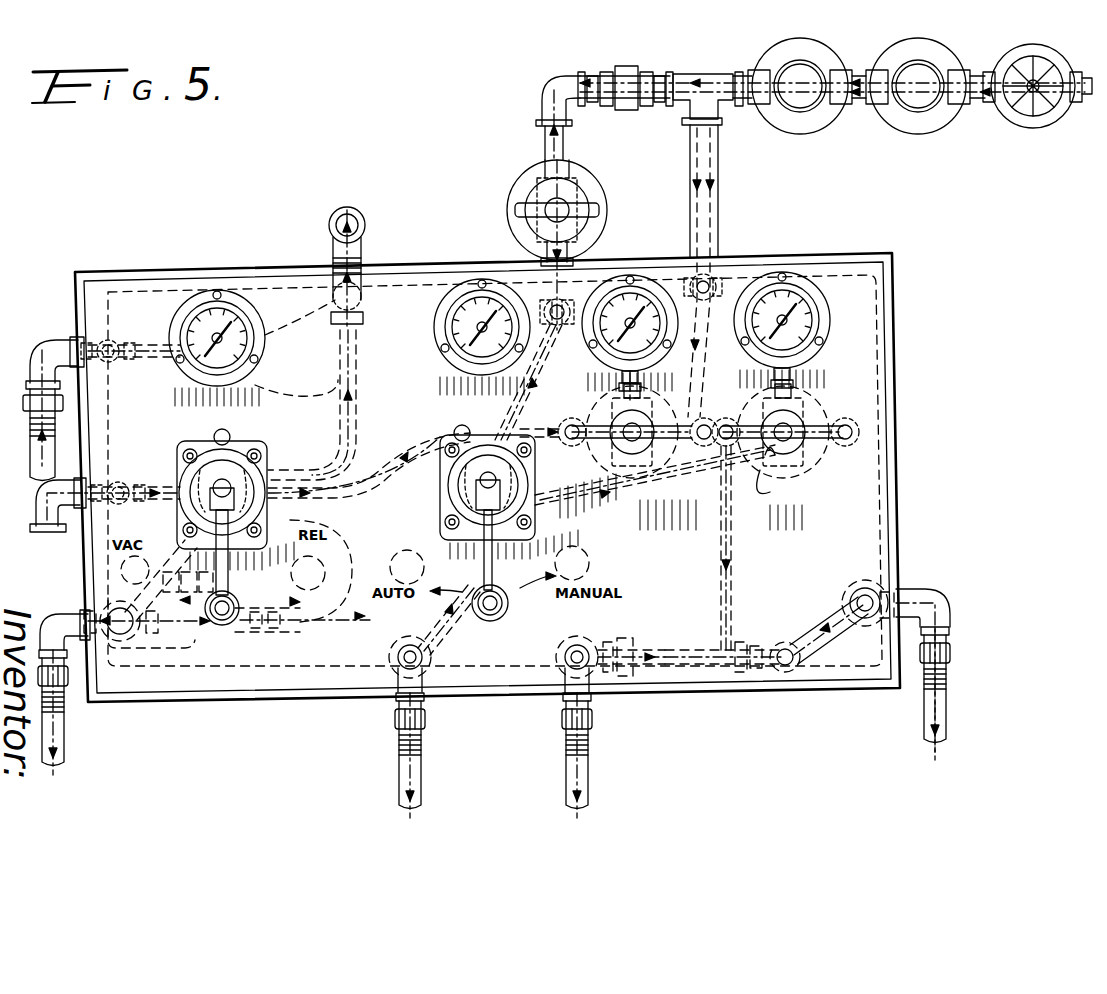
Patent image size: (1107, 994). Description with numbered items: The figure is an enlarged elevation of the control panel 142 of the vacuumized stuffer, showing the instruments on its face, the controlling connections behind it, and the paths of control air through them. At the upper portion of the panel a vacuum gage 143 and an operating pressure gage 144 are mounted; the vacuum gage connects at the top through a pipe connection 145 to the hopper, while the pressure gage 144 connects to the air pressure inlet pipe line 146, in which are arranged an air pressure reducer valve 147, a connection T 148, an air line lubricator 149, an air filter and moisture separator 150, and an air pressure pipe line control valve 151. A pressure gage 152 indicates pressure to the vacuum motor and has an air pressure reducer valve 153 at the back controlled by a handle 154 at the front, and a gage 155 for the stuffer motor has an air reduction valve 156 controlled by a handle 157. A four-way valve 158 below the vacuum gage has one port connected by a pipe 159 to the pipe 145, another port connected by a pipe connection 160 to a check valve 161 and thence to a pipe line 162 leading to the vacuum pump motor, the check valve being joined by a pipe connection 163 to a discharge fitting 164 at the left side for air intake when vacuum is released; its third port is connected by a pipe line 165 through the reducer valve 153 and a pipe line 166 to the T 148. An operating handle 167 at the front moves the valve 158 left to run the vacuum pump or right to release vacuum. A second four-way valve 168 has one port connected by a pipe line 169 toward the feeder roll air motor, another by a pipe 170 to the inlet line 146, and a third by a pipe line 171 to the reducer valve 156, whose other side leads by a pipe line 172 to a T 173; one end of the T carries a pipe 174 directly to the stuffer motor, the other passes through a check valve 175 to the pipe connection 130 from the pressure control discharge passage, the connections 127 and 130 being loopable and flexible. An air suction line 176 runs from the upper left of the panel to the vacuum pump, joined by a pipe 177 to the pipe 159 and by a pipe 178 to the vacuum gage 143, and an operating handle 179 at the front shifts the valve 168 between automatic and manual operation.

The air pressure pipe line connection 127 is at (398, 762).
The pipe connection 130 is at (590, 770).
The control panel 142 is at (424, 396).
The vacuum gage 143 is at (200, 380).
The pressure gage 144 is at (452, 334).
The pipe connection 145 is at (364, 226).
The air pressure inlet pipe line 146 is at (541, 136).
The air pressure reducer valve 147 is at (590, 230).
The connection T 148 is at (683, 105).
The air line lubricator 149 is at (786, 122).
The air filter and moisture separator 150 is at (912, 120).
The air pressure pipe line control valve 151 is at (1008, 106).
The pressure gage 152 is at (592, 367).
The air pressure reducer valve 153 is at (645, 397).
The handle 154 is at (600, 428).
The gage 155 is at (798, 312).
The air reduction valve 156 is at (806, 408).
The handle 157 is at (774, 458).
The four-way valve 158 is at (232, 458).
The pipe 159 is at (290, 396).
The pipe connection 160 is at (100, 610).
The check valve 161 is at (180, 645).
The pipe line 162 is at (66, 722).
The pipe connection 163 is at (165, 470).
The discharge fitting 164 is at (46, 512).
The pipe line 165 is at (345, 492).
The pipe line 166 is at (718, 222).
The operating handle 167 is at (230, 576).
The four-way valve 168 is at (485, 440).
The pipe line 169 is at (424, 625).
The pipe 170 is at (522, 380).
The pipe line 171 is at (610, 502).
The pipe line 172 is at (720, 480).
The T 173 is at (766, 648).
The pipe 174 is at (866, 590).
The check valve 175 is at (622, 640).
The air suction line 176 is at (35, 458).
The pipe 177 is at (290, 318).
The pipe 178 is at (152, 372).
The operating handle 179 is at (408, 550).